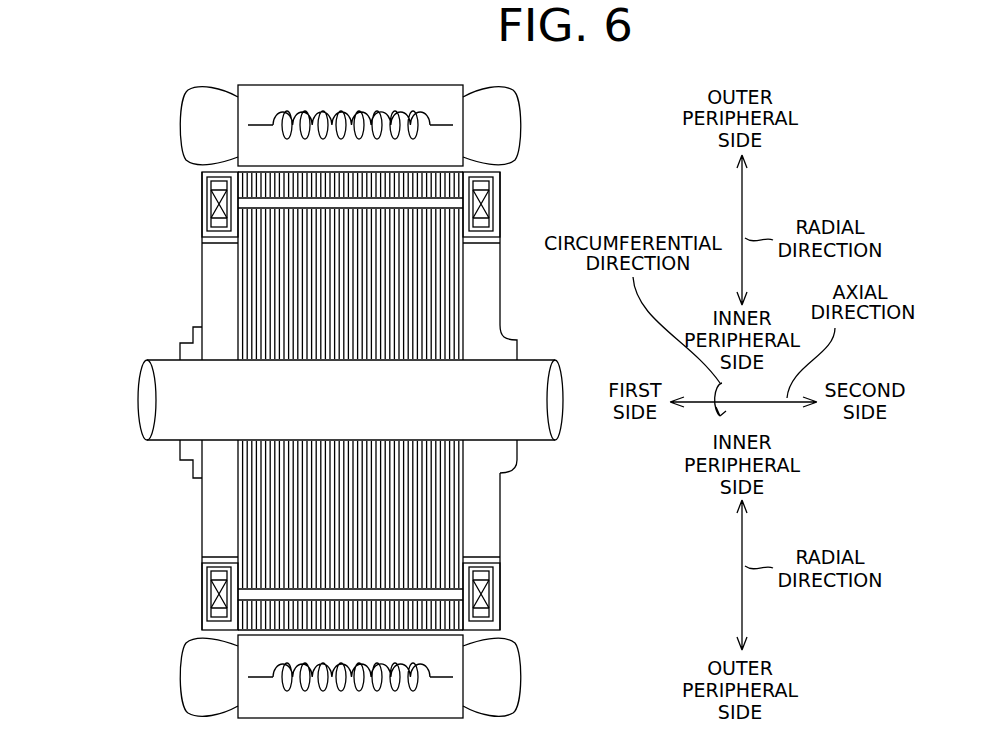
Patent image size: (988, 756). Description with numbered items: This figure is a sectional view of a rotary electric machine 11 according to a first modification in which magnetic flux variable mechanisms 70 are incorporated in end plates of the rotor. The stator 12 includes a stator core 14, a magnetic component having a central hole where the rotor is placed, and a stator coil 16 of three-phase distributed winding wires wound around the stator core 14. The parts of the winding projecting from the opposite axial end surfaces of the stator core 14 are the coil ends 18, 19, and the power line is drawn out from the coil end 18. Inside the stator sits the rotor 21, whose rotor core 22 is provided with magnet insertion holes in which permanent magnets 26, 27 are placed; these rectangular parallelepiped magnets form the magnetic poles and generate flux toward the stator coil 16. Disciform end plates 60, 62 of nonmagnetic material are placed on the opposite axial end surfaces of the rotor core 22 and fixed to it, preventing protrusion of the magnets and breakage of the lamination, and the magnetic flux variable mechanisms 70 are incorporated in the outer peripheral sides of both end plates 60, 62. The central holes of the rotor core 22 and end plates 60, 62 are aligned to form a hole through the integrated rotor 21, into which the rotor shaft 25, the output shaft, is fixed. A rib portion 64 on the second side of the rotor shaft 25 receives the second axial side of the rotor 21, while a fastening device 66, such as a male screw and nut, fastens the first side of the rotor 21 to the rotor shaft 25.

The rotary electric machine 11 is at (105, 117).
The stator 12 is at (477, 45).
The stator core 14 is at (381, 85).
The stator coil 16 is at (330, 113).
The coil end 18 is at (208, 100).
The coil end 19 is at (493, 100).
The rotor 21 is at (70, 257).
The rotor core 22 is at (238, 309).
The rotor shaft 25 is at (160, 412).
The permanent magnet 26 is at (290, 205).
The permanent magnet 27 is at (288, 593).
The end plate 60 is at (216, 257).
The end plate 62 is at (486, 276).
The rib portion 64 is at (508, 344).
The fastening device 66 is at (180, 351).
The magnetic flux variable mechanism 70 is at (201, 208).